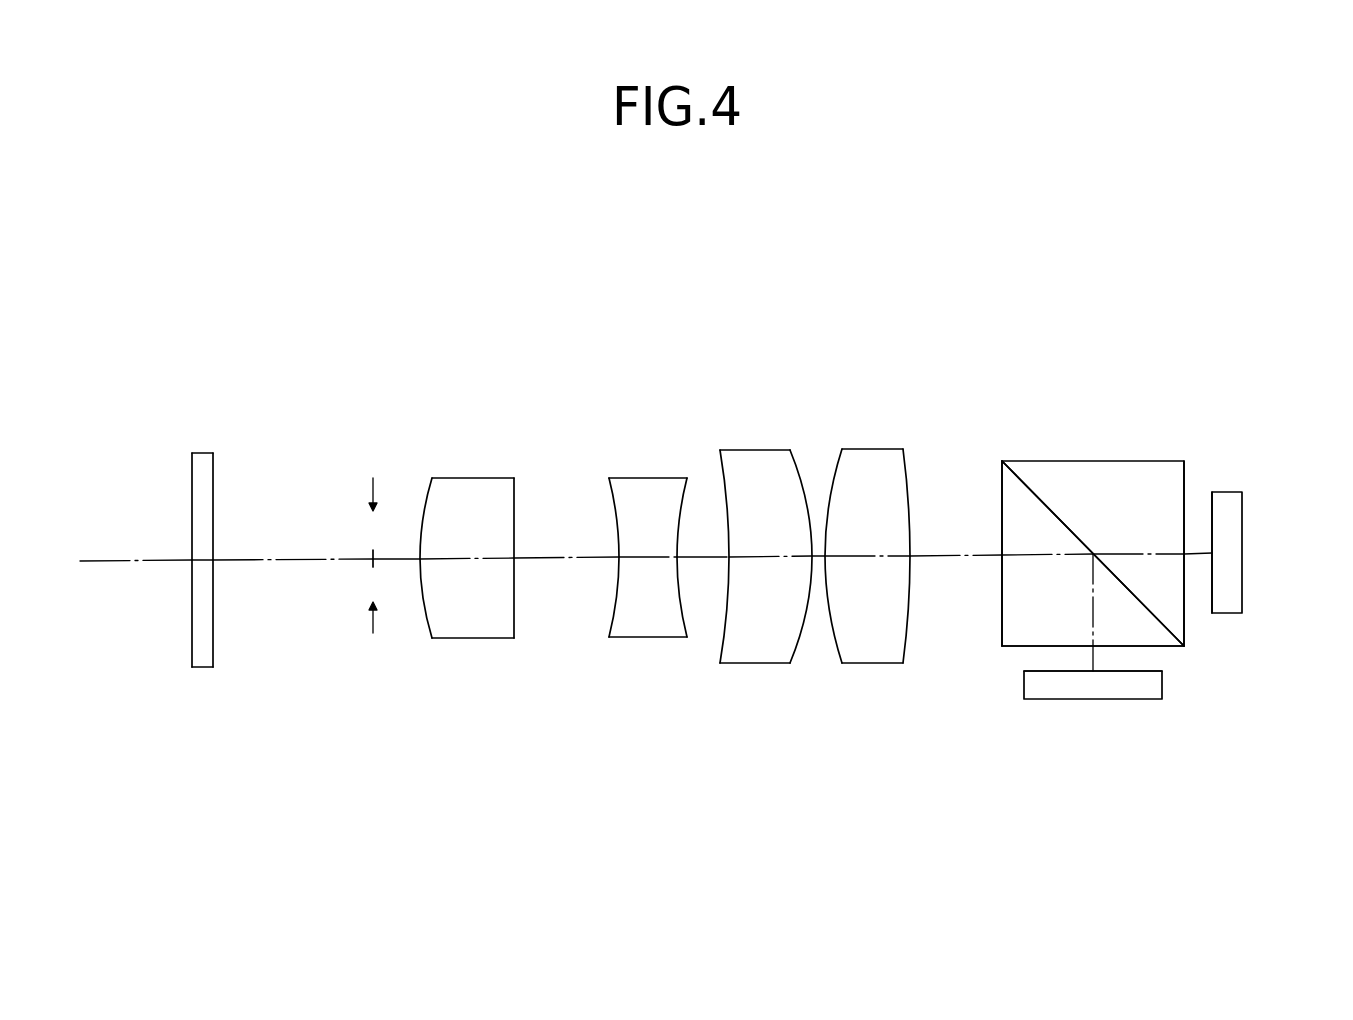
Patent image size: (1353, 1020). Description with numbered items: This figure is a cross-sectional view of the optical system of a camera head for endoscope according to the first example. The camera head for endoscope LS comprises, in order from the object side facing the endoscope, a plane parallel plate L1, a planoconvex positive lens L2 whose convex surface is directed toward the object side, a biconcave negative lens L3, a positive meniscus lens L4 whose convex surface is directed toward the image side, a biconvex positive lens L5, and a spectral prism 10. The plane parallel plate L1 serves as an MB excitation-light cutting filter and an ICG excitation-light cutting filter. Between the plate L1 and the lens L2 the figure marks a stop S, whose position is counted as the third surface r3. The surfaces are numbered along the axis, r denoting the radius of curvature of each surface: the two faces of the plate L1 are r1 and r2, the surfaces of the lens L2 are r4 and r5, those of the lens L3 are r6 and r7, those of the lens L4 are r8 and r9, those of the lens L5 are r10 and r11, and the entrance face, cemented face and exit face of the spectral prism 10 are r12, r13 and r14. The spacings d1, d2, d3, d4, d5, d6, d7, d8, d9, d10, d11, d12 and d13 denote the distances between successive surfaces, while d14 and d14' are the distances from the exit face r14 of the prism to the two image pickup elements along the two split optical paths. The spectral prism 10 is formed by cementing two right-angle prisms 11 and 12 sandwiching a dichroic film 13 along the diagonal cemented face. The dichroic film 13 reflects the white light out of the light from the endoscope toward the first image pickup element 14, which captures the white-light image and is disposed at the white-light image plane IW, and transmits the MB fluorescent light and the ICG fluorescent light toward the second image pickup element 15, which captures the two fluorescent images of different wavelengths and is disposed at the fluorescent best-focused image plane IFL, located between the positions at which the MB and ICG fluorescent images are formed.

The spectral prism 10 is at (1203, 356).
The camera head for endoscope optical system LS is at (1189, 333).
The plane parallel plate L1 is at (203, 453).
The planoconvex positive lens L2 is at (468, 478).
The biconcave negative lens L3 is at (647, 478).
The positive meniscus lens L4 is at (755, 450).
The biconvex positive lens L5 is at (878, 449).
The aperture stop S is at (364, 490).
The radius of curvature of lens surface r1 is at (192, 472).
The radius of curvature of lens surface r2 is at (213, 472).
The radius of curvature of lens surface r3 is at (372, 488).
The radius of curvature of lens surface r4 is at (430, 492).
The radius of curvature of lens surface r5 is at (514, 488).
The radius of curvature of lens surface r6 is at (611, 497).
The radius of curvature of lens surface r7 is at (687, 497).
The radius of curvature of lens surface r8 is at (720, 468).
The radius of curvature of lens surface r9 is at (795, 470).
The radius of curvature of lens surface r10 is at (842, 466).
The radius of curvature of lens surface r11 is at (903, 472).
The radius of curvature of lens surface r12 is at (1002, 480).
The radius of curvature of lens surface r13 is at (1018, 478).
The radius of curvature of lens surface r14 is at (1184, 472).
The distance between lens surfaces d1 is at (203, 565).
The distance between lens surfaces d2 is at (308, 562).
The distance between lens surfaces d3 is at (400, 560).
The distance between lens surfaces d4 is at (465, 560).
The distance between lens surfaces d5 is at (562, 560).
The distance between lens surfaces d6 is at (638, 560).
The distance between lens surfaces d7 is at (700, 560).
The distance between lens surfaces d8 is at (766, 560).
The distance between lens surfaces d9 is at (818, 560).
The distance between lens surfaces d10 is at (866, 560).
The distance between lens surfaces d11 is at (950, 560).
The distance between lens surfaces d12 is at (1042, 557).
The distance between lens surfaces d13 is at (1152, 554).
The distance between lens surfaces d14 is at (1119, 718).
The distance between lens surfaces d14' is at (1250, 612).
The right-angle prism 11 is at (1128, 461).
The right-angle prism 12 is at (1002, 640).
The dichroic film 13 is at (1046, 506).
The first image pickup element 14 is at (1060, 699).
The second image pickup element 15 is at (1230, 523).
The white-light image plane IW is at (1043, 671).
The fluorescent best-focused image plane IFL is at (1212, 512).